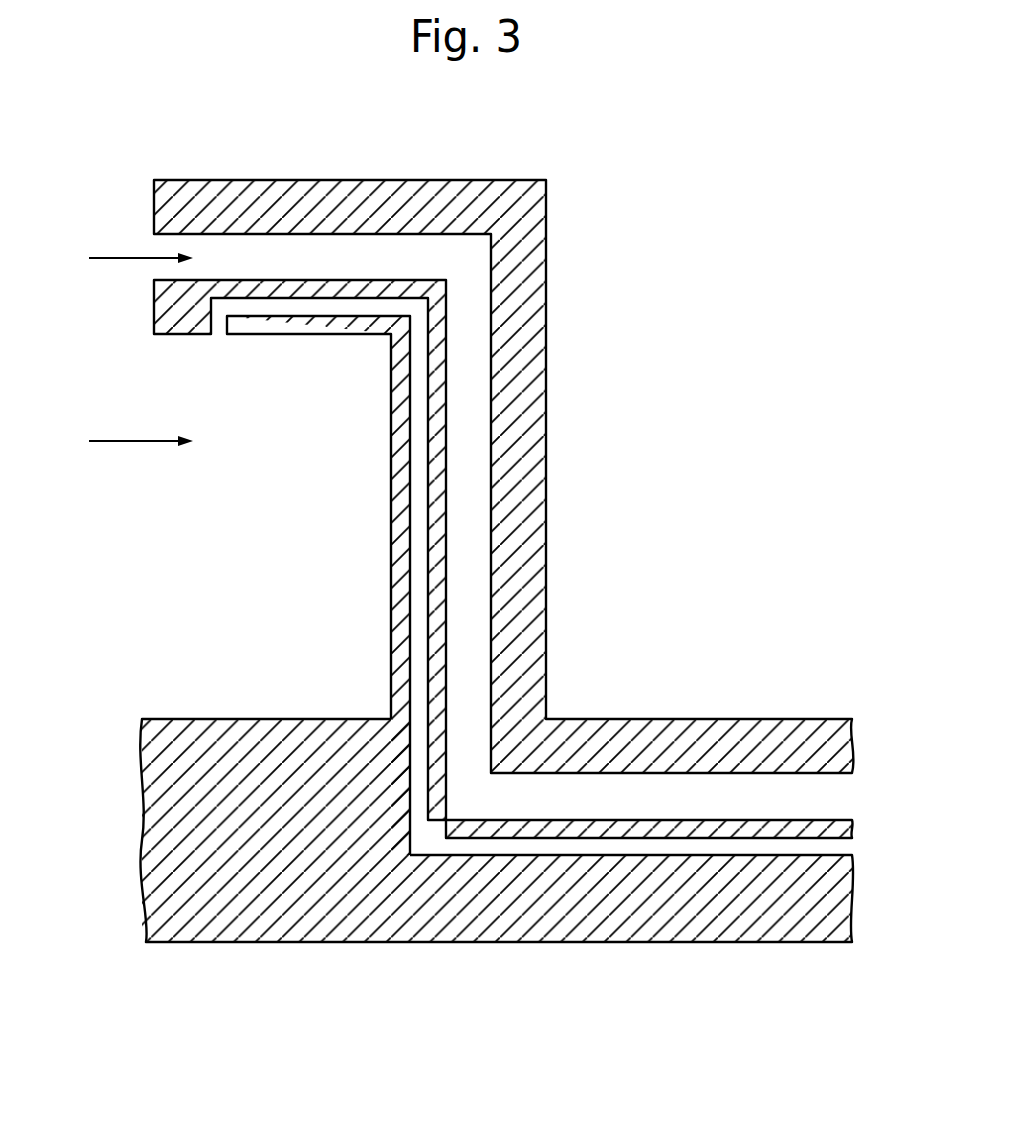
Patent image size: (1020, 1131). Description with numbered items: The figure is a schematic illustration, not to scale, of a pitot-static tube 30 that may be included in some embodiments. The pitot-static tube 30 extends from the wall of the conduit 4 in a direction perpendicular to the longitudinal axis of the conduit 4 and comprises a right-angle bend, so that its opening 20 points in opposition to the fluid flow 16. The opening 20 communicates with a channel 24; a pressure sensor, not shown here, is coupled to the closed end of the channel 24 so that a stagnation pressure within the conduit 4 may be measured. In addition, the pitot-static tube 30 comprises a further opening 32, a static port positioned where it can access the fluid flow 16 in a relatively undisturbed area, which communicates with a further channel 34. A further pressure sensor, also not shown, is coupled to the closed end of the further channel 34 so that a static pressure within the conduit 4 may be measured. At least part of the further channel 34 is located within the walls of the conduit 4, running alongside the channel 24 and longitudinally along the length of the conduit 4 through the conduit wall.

The conduit 4 is at (220, 723).
The fluid flow 16 is at (116, 258).
The opening 20 is at (157, 247).
The channel 24 is at (302, 248).
The pitot-static tube 30 is at (618, 150).
The further opening 32 is at (217, 335).
The further channel 34 is at (308, 312).